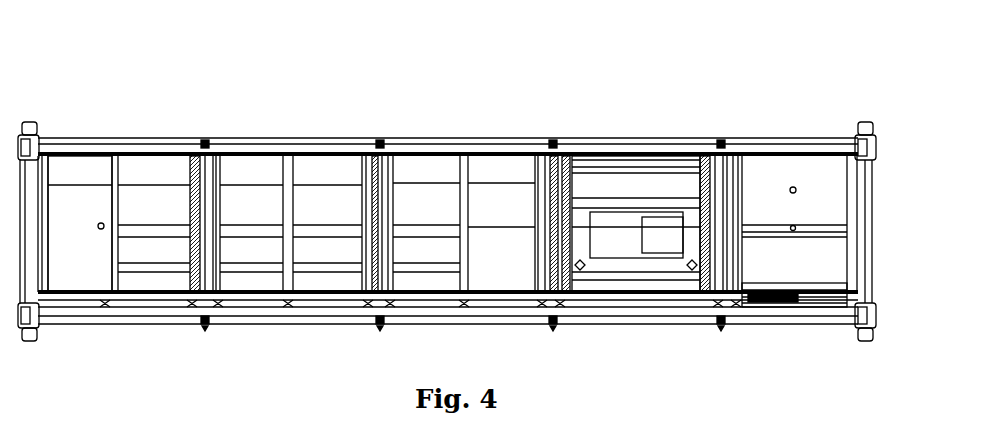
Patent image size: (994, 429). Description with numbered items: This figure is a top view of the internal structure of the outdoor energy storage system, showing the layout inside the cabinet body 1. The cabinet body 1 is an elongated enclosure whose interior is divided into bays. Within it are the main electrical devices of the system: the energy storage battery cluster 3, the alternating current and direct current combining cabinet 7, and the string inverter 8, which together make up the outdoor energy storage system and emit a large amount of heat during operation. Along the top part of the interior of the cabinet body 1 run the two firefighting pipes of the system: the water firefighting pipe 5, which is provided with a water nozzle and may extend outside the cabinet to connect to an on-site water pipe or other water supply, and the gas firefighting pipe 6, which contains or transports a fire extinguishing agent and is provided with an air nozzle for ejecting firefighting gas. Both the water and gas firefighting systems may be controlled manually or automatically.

The cabinet body 1 is at (32, 130).
The energy storage battery cluster 3 is at (72, 198).
The water firefighting pipe 5 is at (140, 225).
The gas firefighting pipe 6 is at (245, 237).
The alternating current and direct current combining cabinet 7 is at (605, 220).
The string inverter 8 is at (767, 243).